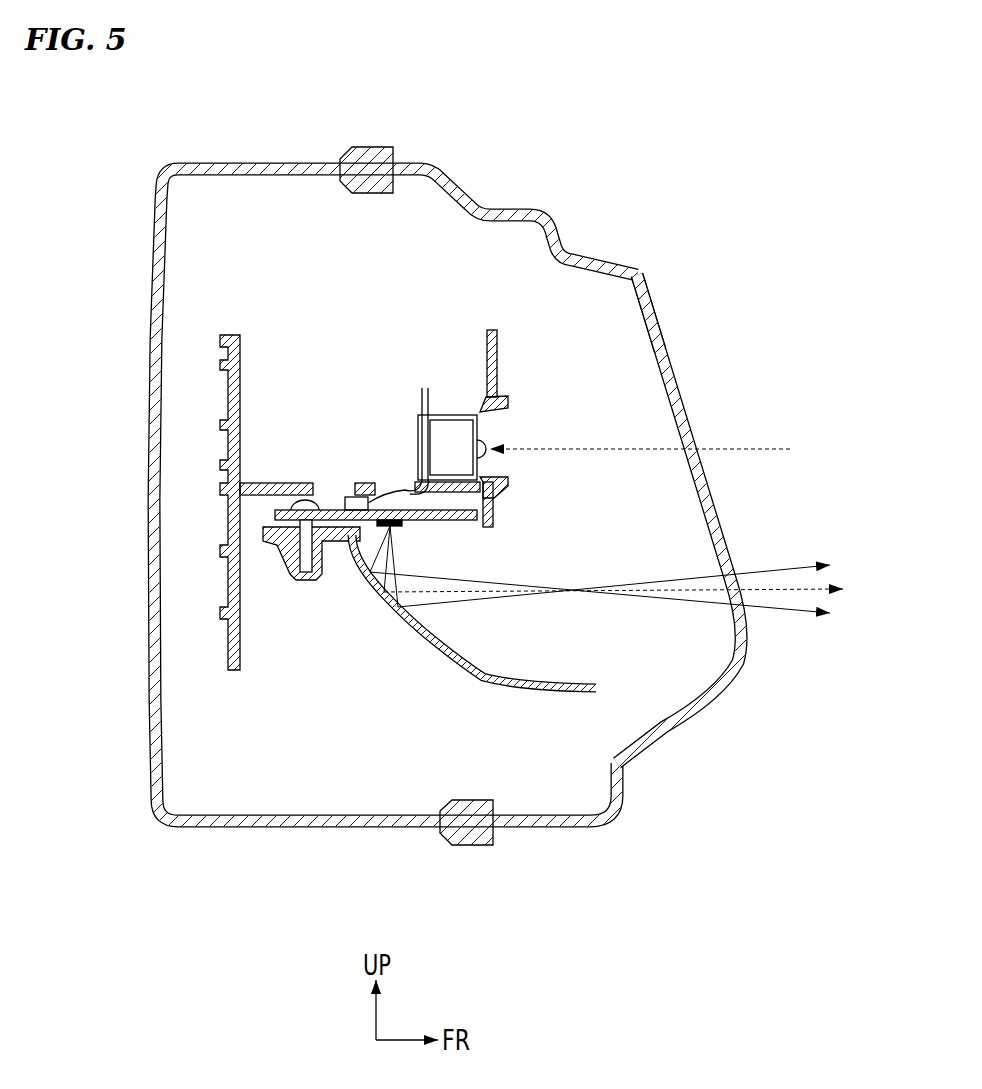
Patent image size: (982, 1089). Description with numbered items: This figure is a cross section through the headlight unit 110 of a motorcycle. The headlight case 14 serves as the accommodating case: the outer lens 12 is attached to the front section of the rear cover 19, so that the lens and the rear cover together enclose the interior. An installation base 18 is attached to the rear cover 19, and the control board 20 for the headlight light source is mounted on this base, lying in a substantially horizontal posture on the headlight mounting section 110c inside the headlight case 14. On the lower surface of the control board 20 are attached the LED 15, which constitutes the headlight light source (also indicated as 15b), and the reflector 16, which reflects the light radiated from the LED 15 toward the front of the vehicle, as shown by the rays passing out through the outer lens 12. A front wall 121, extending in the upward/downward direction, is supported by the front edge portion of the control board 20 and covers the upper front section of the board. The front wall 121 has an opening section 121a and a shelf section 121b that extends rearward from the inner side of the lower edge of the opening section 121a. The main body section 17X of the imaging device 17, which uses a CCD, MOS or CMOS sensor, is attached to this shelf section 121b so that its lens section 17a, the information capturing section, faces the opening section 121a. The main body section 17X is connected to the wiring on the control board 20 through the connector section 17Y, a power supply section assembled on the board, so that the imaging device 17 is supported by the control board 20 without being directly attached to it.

The headlight unit 110 is at (434, 473).
The headlight mounting section 110c is at (672, 325).
The outer lens 12 is at (678, 398).
The headlight case 14 is at (434, 496).
The rear cover 19 is at (150, 352).
The installation base 18 is at (228, 472).
The imaging device 17 is at (452, 389).
The main body section 17X is at (462, 412).
The connector section 17Y is at (352, 497).
The lens section 17a is at (488, 440).
The front wall 121 is at (494, 345).
The opening section 121a is at (505, 470).
The shelf section 121b is at (438, 490).
The control board 20 is at (345, 510).
The LED 15 is at (332, 586).
The light source 15b is at (385, 527).
The reflector 16 is at (460, 660).